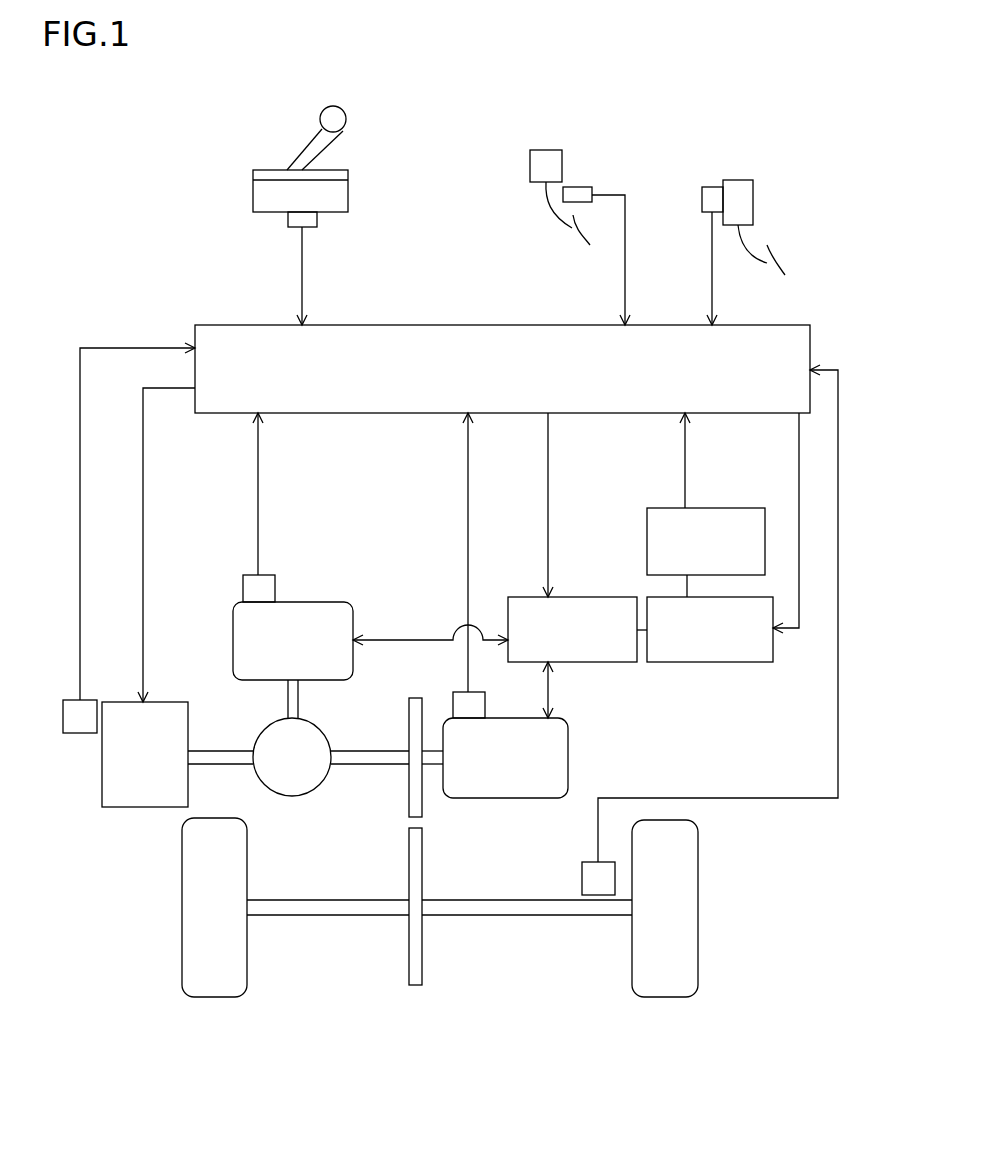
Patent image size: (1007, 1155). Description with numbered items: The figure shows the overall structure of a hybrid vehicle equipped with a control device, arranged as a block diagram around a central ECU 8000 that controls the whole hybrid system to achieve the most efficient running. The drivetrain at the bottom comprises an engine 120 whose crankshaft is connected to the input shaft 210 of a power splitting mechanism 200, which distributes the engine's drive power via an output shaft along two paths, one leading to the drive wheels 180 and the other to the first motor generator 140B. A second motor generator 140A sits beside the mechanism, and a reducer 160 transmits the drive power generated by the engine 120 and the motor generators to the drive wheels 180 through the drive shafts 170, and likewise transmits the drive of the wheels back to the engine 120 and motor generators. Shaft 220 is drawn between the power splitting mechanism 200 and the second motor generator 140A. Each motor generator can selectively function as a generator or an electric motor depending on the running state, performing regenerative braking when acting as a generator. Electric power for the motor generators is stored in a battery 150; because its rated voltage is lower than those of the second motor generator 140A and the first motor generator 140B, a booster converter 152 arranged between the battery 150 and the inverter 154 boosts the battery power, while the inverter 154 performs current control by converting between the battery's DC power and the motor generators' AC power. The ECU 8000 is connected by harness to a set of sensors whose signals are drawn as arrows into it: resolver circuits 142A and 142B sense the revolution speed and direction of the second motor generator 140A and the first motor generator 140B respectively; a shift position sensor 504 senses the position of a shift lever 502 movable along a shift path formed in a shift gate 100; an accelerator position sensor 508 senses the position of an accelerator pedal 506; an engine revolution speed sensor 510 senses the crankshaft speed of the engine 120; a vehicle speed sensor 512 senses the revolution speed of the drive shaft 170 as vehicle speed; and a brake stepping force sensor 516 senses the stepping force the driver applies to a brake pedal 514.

The shift gate 100 is at (348, 175).
The shift lever 502 is at (340, 116).
The shift position sensor 504 is at (317, 222).
The ECU 8000 is at (425, 326).
The accelerator pedal 506 is at (553, 222).
The accelerator position sensor 508 is at (580, 187).
The brake pedal 514 is at (753, 234).
The brake stepping force sensor 516 is at (710, 187).
The battery 150 is at (707, 508).
The inverter 154 is at (527, 597).
The booster converter 152 is at (690, 662).
The motor generator MG(1) 140B is at (317, 602).
The resolver circuit 142B is at (243, 580).
The motor generator MG(2) 140A is at (568, 752).
The resolver circuit 142A is at (455, 695).
The engine 120 is at (127, 807).
The engine revolution speed sensor 510 is at (75, 735).
The input shaft 210 is at (225, 751).
The power splitting mechanism 200 is at (293, 796).
The drive shaft 220 is at (370, 767).
The reducer 160 is at (412, 987).
The drive shaft 170 is at (327, 915).
The drive wheels 180 is at (212, 997).
The vehicle speed sensor 512 is at (582, 880).